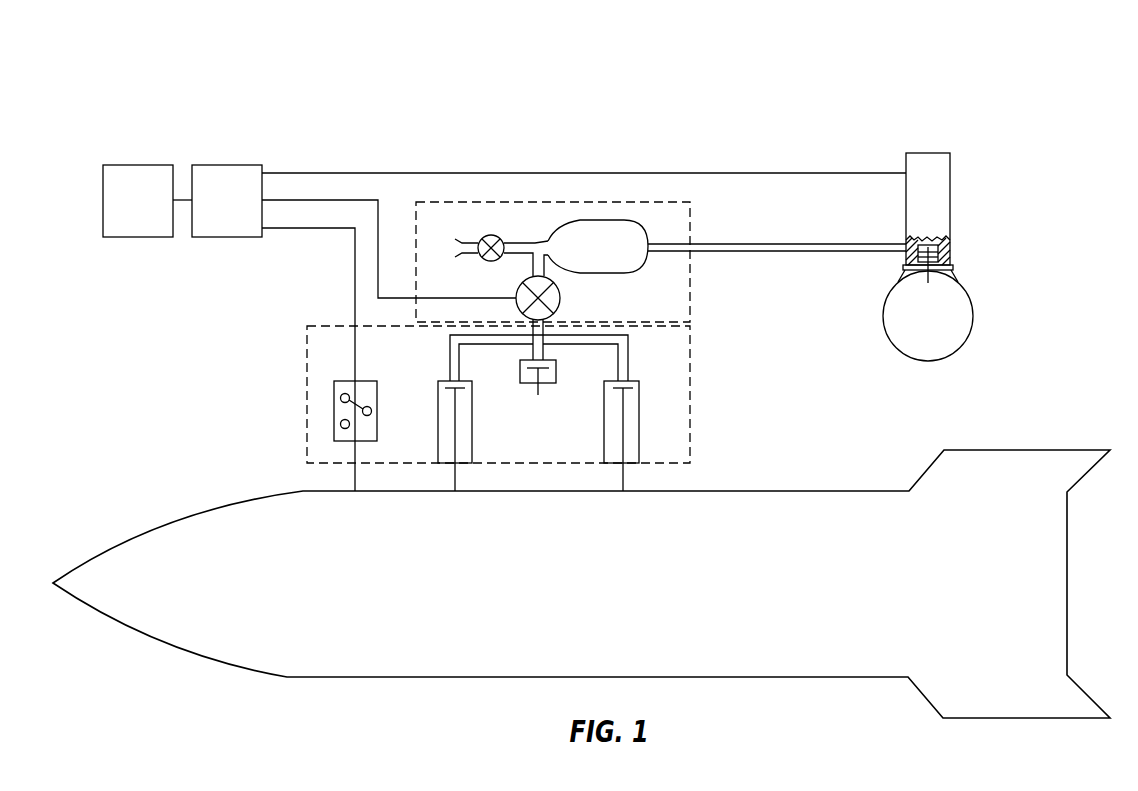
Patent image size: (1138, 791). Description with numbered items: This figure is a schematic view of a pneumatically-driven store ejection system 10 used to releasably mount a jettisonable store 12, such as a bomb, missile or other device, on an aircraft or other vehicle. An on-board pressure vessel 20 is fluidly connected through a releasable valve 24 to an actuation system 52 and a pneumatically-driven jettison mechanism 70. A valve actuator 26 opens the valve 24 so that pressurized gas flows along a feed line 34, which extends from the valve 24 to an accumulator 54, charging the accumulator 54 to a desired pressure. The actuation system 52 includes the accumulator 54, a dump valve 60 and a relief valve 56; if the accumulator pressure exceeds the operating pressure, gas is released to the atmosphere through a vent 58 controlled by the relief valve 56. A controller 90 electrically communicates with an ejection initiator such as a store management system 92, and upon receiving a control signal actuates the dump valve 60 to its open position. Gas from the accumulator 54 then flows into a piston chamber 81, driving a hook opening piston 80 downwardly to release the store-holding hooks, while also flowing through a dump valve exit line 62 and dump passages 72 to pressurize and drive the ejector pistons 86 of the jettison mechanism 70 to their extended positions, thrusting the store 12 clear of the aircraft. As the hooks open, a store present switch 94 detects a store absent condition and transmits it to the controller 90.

The store ejection system 10 is at (838, 84).
The jettisonable store 12 is at (1018, 491).
The pressure vessel 20 is at (976, 302).
The releasable valve 24 is at (917, 272).
The valve actuator 26 is at (951, 170).
The feed line 34 is at (800, 243).
The actuation system 52 is at (690, 272).
The accumulator 54 is at (585, 220).
The relief valve 56 is at (491, 235).
The vent 58 is at (467, 238).
The dump valve 60 is at (558, 296).
The dump valve exit line 62 is at (545, 333).
The jettison mechanism 70 is at (690, 385).
The dump passages 72 is at (450, 362).
The hook opening piston 80 is at (545, 392).
The piston chamber 81 is at (558, 370).
The ejector pistons 86 is at (472, 437).
The controller 90 is at (242, 165).
The store management system 92 is at (143, 165).
The store present switch 94 is at (334, 410).